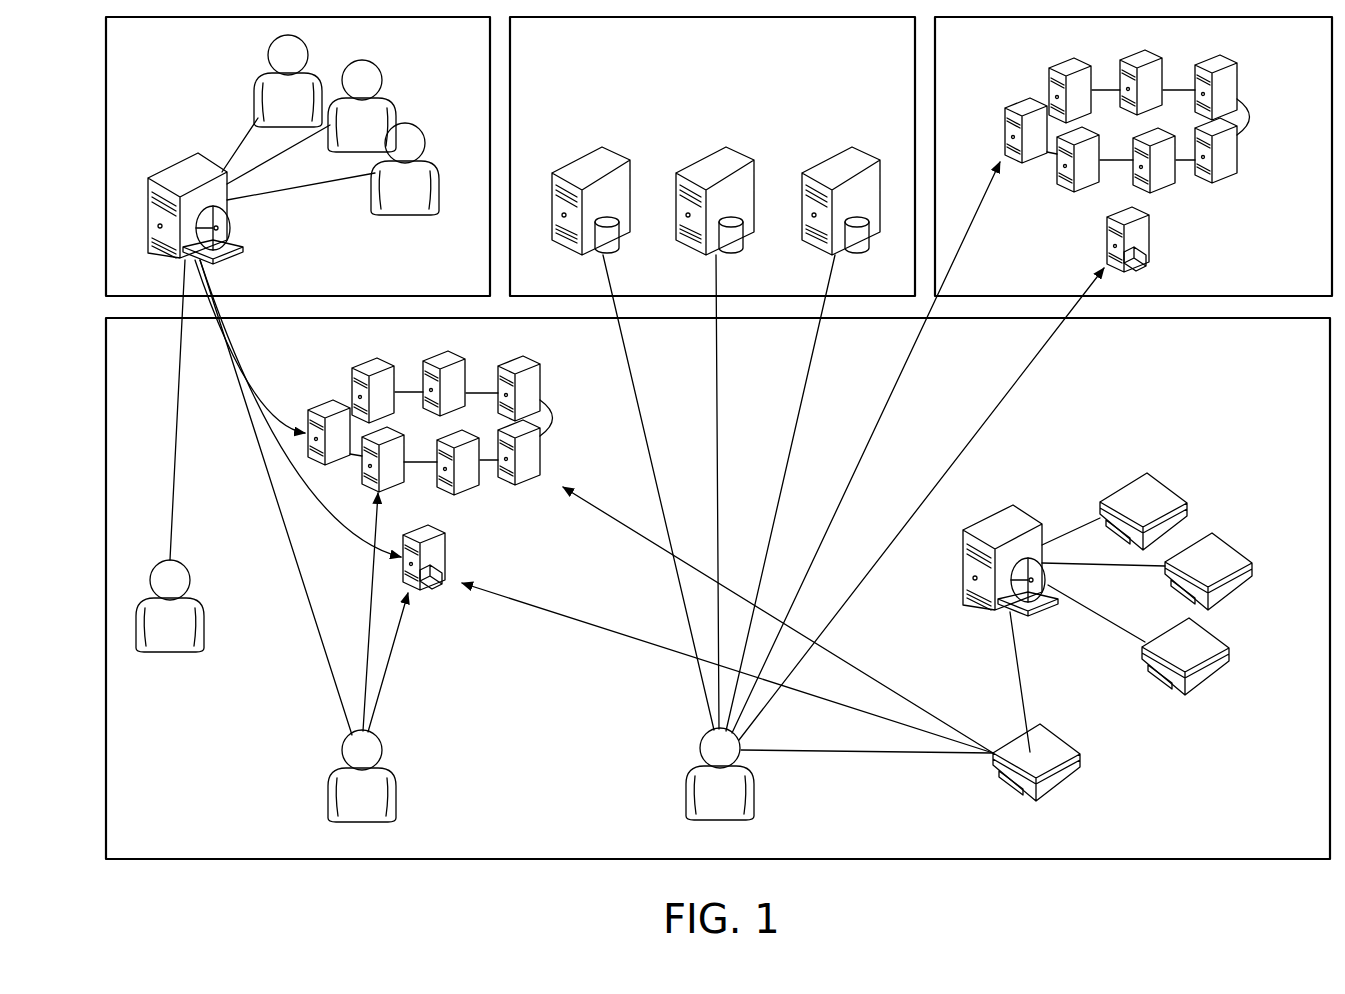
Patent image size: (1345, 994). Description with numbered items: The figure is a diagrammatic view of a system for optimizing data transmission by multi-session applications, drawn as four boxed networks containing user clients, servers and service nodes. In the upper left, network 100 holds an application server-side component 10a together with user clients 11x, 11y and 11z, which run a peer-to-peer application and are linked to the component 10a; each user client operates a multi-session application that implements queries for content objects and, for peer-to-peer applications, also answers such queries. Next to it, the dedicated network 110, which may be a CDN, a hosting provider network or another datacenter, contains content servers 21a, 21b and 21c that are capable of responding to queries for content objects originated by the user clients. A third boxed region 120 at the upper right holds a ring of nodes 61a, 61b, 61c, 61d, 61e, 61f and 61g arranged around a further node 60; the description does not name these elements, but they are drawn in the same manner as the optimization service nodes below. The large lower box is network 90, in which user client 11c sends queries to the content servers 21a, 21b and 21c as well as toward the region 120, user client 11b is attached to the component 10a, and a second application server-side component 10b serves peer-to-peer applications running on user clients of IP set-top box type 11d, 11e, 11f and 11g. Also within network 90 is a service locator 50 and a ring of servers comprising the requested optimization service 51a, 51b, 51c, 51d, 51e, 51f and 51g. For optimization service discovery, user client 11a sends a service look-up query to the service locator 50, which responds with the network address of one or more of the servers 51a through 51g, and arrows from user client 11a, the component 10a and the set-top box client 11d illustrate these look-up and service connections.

The network 100 is at (168, 46).
The dedicated network 110 is at (573, 46).
The second organization network 120 is at (996, 46).
The network 90 is at (150, 349).
The application server-side component 10a is at (178, 170).
The application server-side component 10b is at (1008, 522).
The user client 11x is at (268, 52).
The user client 11y is at (382, 79).
The user client 11z is at (407, 203).
The user client 11a is at (382, 750).
The user client 11b is at (167, 638).
The user client 11c is at (700, 785).
The user client of IP set-top box type 11d is at (1055, 737).
The user client of IP set-top box type 11e is at (1203, 670).
The user client of IP set-top box type 11f is at (1225, 553).
The user client of IP set-top box type 11g is at (1157, 495).
The content server 21a is at (580, 170).
The content server 21b is at (705, 170).
The content server 21c is at (830, 170).
The service locator 50 is at (440, 548).
The monitoring node 60 is at (1142, 232).
The optimization service 51a is at (330, 407).
The optimization service 51b is at (387, 463).
The optimization service 51c is at (465, 468).
The optimization service 51d is at (537, 437).
The optimization service 51e is at (533, 382).
The optimization service 51f is at (445, 360).
The optimization service 51g is at (373, 362).
The blockchain node 61a is at (1022, 110).
The blockchain node 61b is at (1082, 170).
The blockchain node 61c is at (1158, 172).
The blockchain node 61d is at (1218, 158).
The blockchain node 61e is at (1232, 85).
The blockchain node 61f is at (1138, 63).
The blockchain node 61g is at (1068, 65).